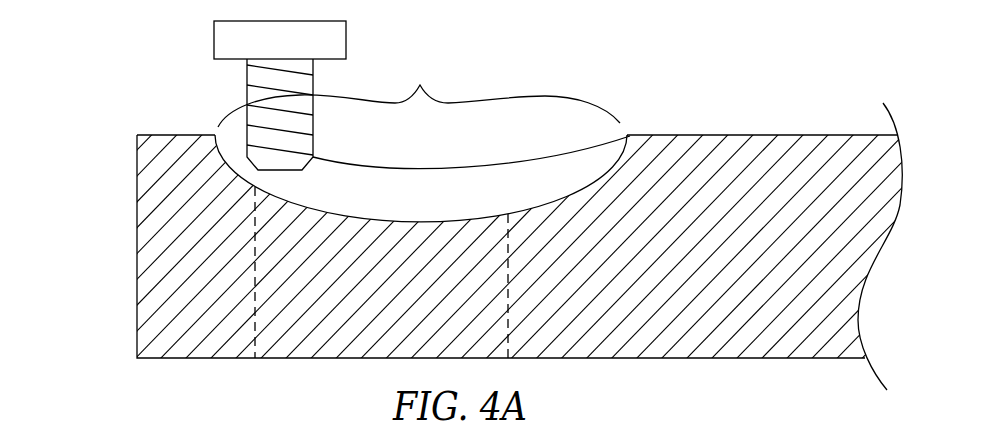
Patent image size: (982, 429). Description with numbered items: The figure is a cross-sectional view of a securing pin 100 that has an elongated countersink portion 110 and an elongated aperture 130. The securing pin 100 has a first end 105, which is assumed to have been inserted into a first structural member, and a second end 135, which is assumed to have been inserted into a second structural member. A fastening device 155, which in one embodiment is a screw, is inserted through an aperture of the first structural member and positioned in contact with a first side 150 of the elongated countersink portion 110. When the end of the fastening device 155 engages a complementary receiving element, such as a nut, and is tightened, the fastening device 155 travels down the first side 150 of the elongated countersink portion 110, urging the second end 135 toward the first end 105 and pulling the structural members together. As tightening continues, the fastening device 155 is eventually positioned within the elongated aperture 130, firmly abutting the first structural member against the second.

The securing pin 100 is at (86, 240).
The first end 105 is at (137, 313).
The elongated countersink portion 110 is at (424, 116).
The elongated aperture 130 is at (508, 330).
The second end 135 is at (782, 135).
The first side 150 is at (277, 197).
The fastening device 155 is at (214, 42).